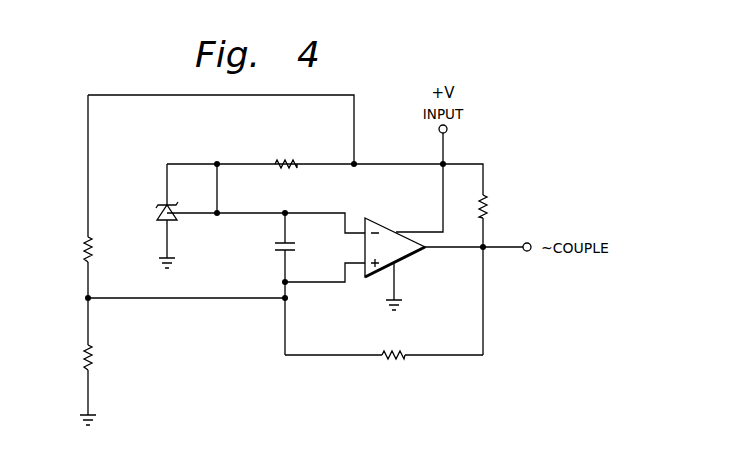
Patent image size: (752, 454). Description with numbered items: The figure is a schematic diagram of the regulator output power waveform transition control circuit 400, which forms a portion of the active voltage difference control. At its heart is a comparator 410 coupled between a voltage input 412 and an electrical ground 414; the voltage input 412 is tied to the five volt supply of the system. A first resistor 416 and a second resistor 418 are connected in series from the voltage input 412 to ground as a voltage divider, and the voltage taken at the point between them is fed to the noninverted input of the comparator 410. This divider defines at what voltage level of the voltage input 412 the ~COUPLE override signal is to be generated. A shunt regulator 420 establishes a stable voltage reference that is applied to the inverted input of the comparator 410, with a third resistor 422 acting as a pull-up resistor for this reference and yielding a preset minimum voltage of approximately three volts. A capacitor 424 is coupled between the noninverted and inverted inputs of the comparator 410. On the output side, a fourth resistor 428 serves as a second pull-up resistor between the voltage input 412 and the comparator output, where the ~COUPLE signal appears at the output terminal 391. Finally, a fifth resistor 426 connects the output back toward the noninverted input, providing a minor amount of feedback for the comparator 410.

The regulator output power waveform transition control circuit 400 is at (594, 130).
The comparator 410 is at (409, 256).
The voltage input 412 is at (447, 131).
The electrical ground 414 is at (402, 305).
The first resistor 416 is at (84, 247).
The second resistor 418 is at (84, 355).
The shunt regulator 420 is at (164, 205).
The third resistor 422 is at (285, 159).
The capacitor 424 is at (274, 247).
The fifth resistor 426 is at (392, 361).
The fourth resistor 428 is at (487, 207).
The coupling output terminal 391 is at (529, 252).